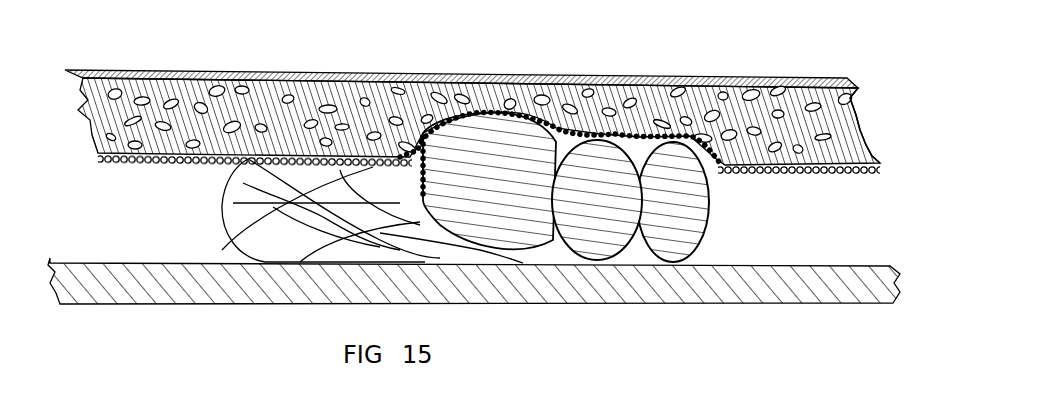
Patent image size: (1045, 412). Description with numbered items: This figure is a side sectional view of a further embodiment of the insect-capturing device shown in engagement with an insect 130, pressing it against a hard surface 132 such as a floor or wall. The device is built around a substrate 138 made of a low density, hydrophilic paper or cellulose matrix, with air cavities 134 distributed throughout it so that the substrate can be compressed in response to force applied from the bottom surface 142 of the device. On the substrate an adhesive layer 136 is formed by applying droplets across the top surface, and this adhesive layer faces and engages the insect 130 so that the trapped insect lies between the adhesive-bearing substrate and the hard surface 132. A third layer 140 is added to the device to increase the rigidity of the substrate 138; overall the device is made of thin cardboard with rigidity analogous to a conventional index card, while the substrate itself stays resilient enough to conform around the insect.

The insect 130 is at (708, 226).
The hard surface 132 is at (847, 294).
The air cavities 134 is at (663, 75).
The adhesive layer 136 is at (837, 172).
The substrate 138 is at (850, 122).
The third layer 140 is at (328, 70).
The bottom surface 142 is at (495, 77).